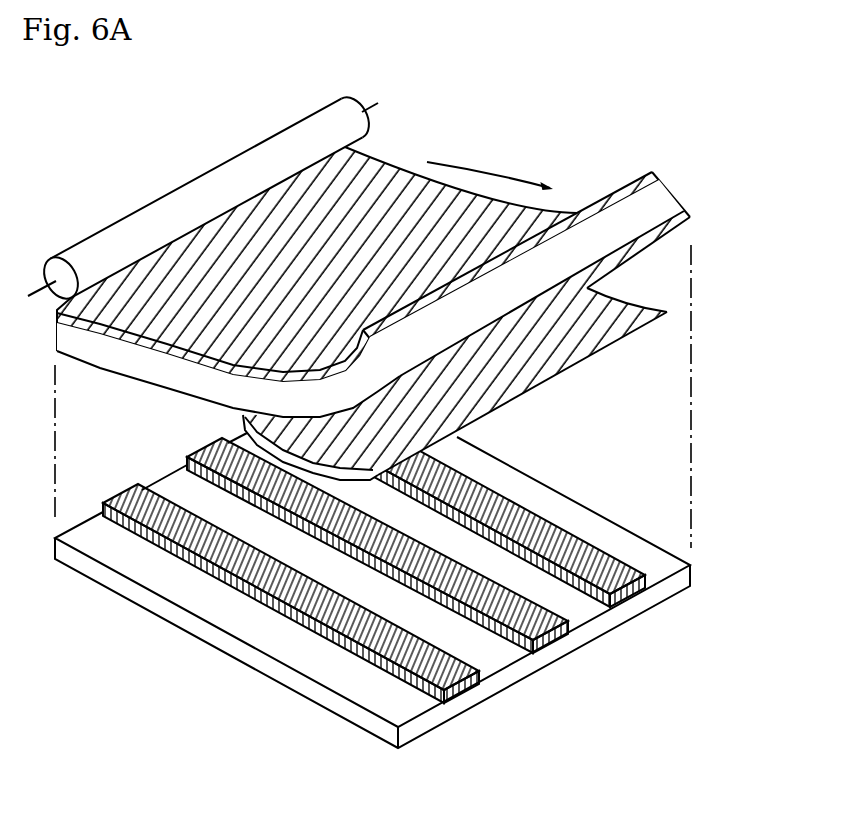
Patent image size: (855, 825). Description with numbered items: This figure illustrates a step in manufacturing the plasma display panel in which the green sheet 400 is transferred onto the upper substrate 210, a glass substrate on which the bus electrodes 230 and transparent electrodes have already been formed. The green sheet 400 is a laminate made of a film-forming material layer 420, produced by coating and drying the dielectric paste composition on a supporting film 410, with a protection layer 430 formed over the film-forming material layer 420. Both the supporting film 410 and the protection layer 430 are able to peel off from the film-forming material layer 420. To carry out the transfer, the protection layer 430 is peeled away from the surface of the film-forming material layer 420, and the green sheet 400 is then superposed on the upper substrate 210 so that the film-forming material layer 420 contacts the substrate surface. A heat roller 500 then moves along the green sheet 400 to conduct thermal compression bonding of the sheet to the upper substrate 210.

The upper substrate 210 is at (523, 668).
The bus electrodes 230 is at (617, 567).
The green sheet 400 is at (431, 272).
The supporting film 410 is at (620, 190).
The film-forming material layer 420 is at (670, 197).
The protection layer 430 is at (663, 308).
The heat roller 500 is at (233, 163).